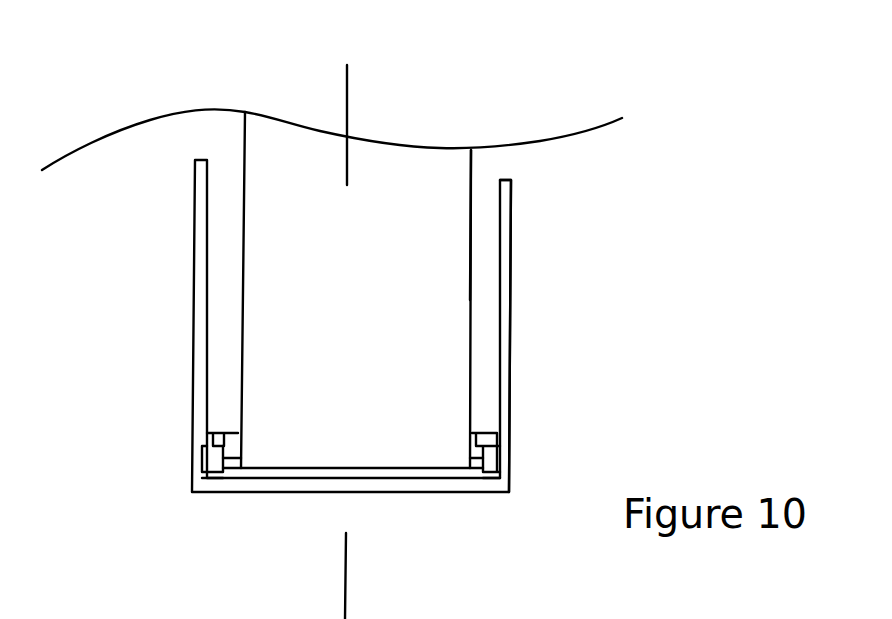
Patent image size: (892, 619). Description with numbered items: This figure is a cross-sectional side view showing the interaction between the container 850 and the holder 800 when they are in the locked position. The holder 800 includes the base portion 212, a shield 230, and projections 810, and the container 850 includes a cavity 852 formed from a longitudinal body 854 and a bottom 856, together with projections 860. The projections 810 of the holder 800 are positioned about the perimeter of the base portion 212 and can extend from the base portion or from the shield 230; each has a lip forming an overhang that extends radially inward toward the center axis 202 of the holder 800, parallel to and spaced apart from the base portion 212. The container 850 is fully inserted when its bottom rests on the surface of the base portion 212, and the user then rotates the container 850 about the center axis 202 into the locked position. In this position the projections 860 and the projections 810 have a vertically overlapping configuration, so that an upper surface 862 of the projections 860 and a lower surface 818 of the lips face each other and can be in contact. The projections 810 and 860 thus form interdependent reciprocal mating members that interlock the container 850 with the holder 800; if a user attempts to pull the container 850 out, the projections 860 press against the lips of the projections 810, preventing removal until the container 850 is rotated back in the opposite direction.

The center axis 202 is at (350, 105).
The base portion 212 is at (338, 487).
The shield 230 is at (197, 240).
The holder 800 is at (553, 262).
The projections 810 is at (229, 409).
The lower surface 818 is at (227, 430).
The container 850 is at (497, 166).
The cavity 852 is at (305, 170).
The longitudinal body 854 is at (245, 133).
The bottom 856 is at (342, 467).
The projections 860 is at (242, 460).
The upper surface 862 is at (217, 493).